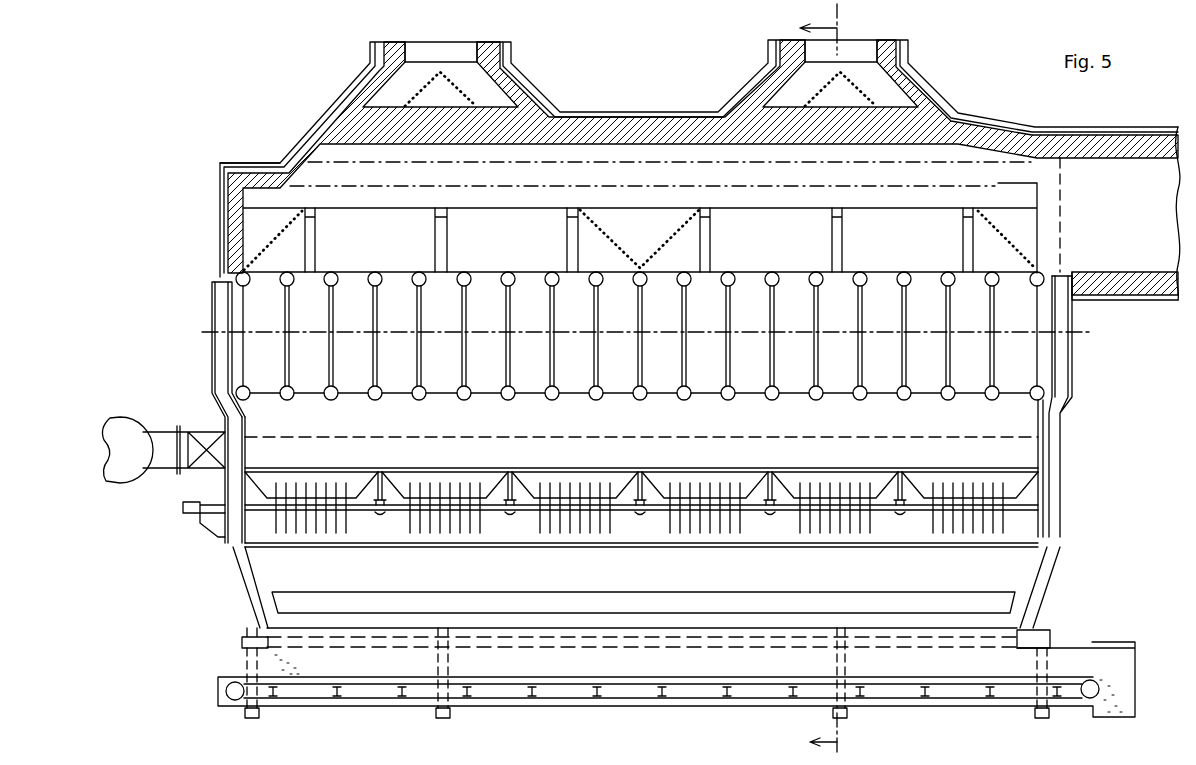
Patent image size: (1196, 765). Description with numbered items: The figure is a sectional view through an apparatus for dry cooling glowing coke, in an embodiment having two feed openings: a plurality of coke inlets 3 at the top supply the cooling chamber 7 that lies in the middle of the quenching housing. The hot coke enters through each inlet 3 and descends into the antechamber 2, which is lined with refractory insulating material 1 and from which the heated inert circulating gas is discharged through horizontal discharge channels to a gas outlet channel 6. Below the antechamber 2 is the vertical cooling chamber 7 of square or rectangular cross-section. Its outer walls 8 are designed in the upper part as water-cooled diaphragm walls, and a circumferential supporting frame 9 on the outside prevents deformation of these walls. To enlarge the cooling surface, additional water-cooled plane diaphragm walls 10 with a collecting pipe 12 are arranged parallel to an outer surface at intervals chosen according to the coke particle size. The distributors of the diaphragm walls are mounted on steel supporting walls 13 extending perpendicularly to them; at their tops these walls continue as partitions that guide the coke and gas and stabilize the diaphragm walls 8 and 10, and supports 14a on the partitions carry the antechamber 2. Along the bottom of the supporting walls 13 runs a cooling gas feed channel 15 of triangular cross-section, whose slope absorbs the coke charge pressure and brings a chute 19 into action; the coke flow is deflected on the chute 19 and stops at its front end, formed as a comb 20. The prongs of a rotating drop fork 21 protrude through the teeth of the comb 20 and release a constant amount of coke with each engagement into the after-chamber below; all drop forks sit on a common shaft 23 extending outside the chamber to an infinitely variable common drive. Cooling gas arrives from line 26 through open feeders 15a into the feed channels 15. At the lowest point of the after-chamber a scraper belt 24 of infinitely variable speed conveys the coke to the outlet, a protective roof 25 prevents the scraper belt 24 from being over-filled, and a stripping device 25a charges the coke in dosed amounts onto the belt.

The refractory insulating material 1 is at (700, 170).
The antechamber 2 is at (914, 240).
The coke inlet 3 is at (862, 61).
The gas outlet channel 6 is at (810, 378).
The cooling chamber 7 is at (798, 372).
The outer walls 8 is at (1036, 357).
The circumferential supporting frame 9 is at (1056, 378).
The plane diaphragm walls 10 is at (687, 313).
The collecting pipe 12 is at (733, 284).
The steel supporting walls 13 is at (567, 428).
The supports 14a is at (567, 252).
The cooling gas feed channel 15 is at (295, 465).
The open feeders 15a is at (167, 456).
The chute 19 is at (877, 483).
The comb 20 is at (833, 497).
The rotating drop fork 21 is at (471, 520).
The common shaft 23 is at (756, 509).
The scraper belt 24 is at (687, 672).
The protective roof 25 is at (672, 605).
The stripping device 25a is at (531, 612).
The line 26 is at (124, 431).